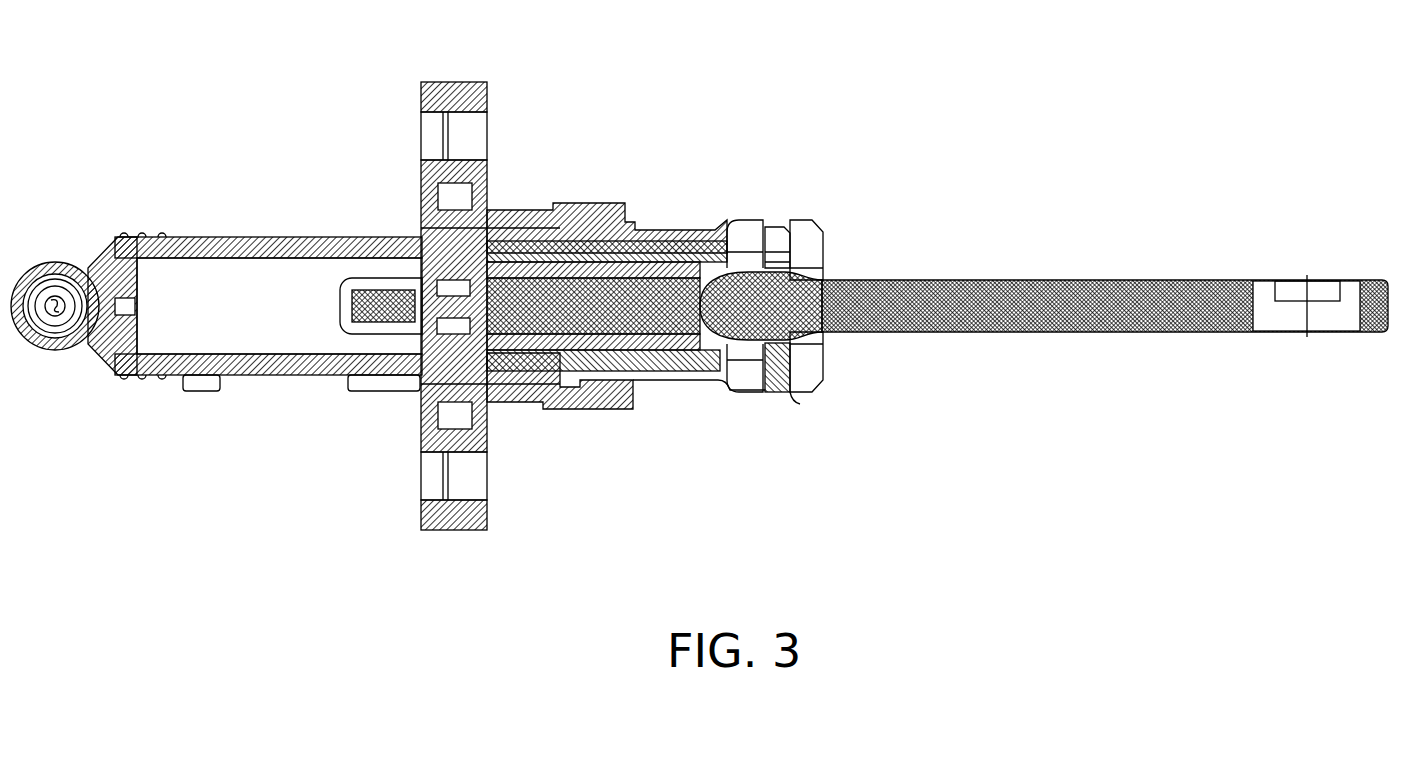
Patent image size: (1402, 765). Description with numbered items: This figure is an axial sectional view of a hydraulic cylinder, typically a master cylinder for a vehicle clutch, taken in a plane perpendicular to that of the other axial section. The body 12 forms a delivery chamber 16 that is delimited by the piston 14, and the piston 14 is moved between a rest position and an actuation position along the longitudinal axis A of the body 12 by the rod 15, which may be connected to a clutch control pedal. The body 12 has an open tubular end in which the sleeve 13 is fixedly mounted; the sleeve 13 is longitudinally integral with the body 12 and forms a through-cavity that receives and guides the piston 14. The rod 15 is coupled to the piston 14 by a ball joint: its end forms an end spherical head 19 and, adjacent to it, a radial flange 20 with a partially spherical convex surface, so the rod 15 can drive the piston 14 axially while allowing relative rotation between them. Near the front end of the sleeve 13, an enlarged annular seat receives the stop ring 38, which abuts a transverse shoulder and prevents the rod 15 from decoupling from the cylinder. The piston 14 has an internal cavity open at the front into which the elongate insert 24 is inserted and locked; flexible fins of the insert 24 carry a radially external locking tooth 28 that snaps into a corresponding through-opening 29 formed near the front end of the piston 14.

The body 12 is at (288, 372).
The sleeve 13 is at (665, 250).
The piston 14 is at (583, 355).
The rod 15 is at (1165, 280).
The delivery chamber 16 is at (267, 283).
The end spherical head 19 is at (700, 235).
The radial flange 20 is at (790, 268).
The insert 24 is at (583, 300).
The locking tooth 28 is at (742, 250).
The through-opening 29 is at (735, 345).
The stop ring 38 is at (800, 404).
The longitudinal axis A is at (655, 318).